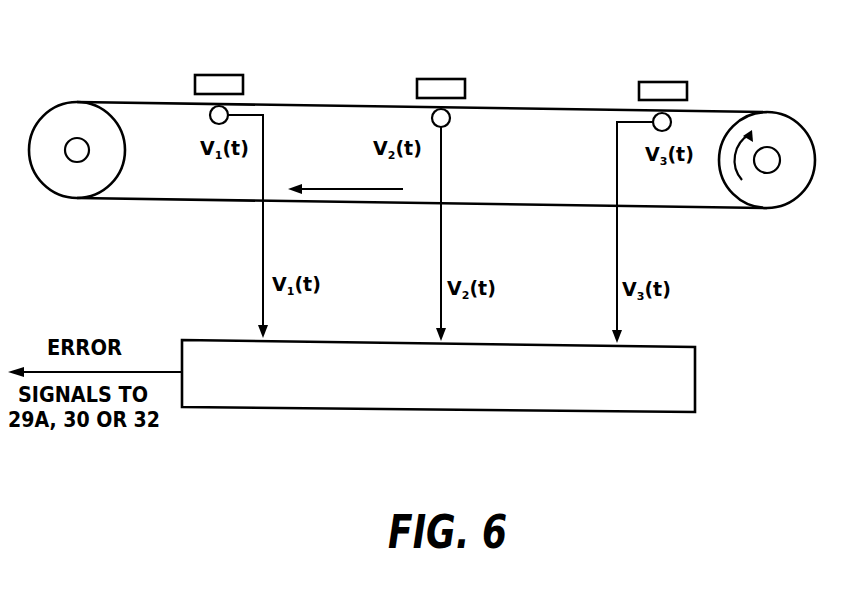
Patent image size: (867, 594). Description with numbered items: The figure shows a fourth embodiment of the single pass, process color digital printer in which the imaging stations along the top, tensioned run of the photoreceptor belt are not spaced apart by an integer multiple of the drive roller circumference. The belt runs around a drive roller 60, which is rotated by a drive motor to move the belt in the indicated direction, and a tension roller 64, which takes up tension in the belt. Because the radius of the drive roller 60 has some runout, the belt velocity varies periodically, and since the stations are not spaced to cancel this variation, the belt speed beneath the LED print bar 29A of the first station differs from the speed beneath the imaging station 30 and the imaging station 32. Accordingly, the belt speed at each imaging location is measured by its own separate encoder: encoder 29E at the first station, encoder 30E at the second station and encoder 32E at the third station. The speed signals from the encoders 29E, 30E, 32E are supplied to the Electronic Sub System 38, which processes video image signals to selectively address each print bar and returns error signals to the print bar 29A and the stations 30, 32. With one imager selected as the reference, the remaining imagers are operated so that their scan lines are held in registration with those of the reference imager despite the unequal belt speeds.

The tension roller 64 is at (88, 117).
The drive roller 60 is at (782, 123).
The LED print bar 29A is at (233, 83).
The imaging station 30 is at (458, 82).
The imaging station 32 is at (675, 88).
The encoder 29E is at (210, 110).
The encoder 30E is at (447, 122).
The encoder 32E is at (655, 117).
The Electronic Sub System (ESS) 38 is at (543, 405).